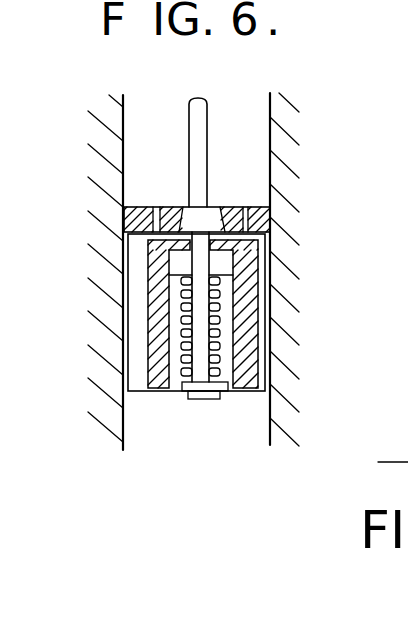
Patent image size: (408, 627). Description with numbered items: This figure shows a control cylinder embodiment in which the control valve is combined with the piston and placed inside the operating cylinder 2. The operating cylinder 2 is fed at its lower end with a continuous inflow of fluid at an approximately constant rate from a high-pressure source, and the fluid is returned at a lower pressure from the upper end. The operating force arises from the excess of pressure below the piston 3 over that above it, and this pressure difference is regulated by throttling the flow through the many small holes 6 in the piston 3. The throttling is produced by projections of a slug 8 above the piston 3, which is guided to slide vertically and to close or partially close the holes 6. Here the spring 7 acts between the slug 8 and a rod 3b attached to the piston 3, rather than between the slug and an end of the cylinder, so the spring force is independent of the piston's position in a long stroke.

The operating cylinder 2 is at (113, 320).
The piston 3 is at (124, 213).
The rod 3b is at (203, 376).
The holes 6 is at (258, 203).
The spring 7 is at (220, 333).
The slug 8 is at (155, 371).